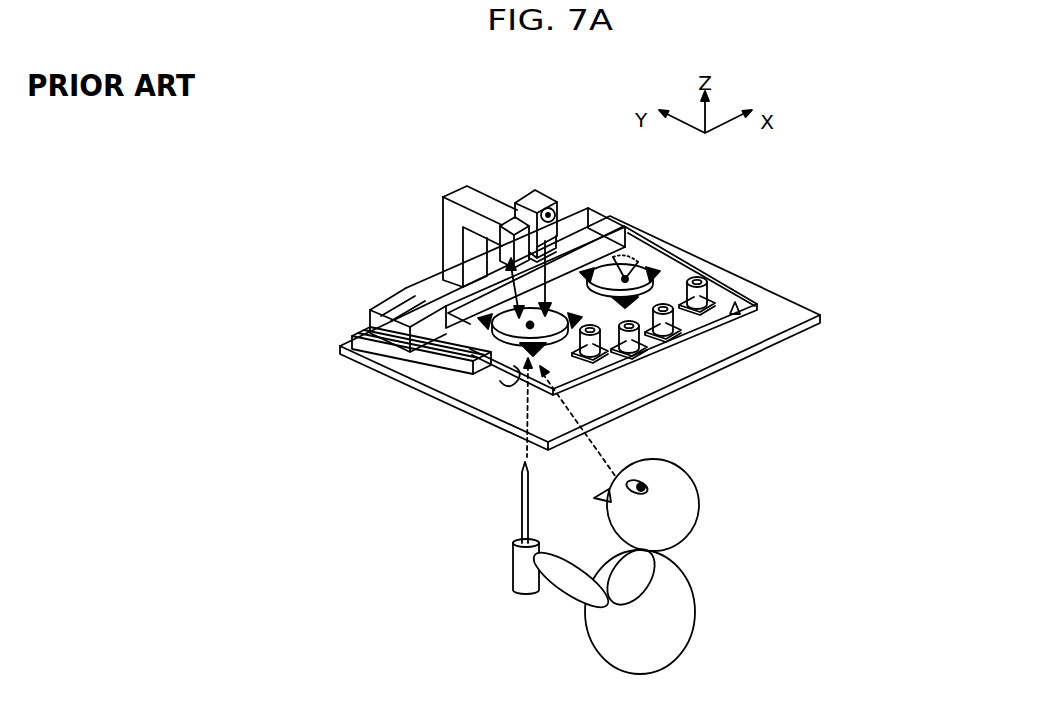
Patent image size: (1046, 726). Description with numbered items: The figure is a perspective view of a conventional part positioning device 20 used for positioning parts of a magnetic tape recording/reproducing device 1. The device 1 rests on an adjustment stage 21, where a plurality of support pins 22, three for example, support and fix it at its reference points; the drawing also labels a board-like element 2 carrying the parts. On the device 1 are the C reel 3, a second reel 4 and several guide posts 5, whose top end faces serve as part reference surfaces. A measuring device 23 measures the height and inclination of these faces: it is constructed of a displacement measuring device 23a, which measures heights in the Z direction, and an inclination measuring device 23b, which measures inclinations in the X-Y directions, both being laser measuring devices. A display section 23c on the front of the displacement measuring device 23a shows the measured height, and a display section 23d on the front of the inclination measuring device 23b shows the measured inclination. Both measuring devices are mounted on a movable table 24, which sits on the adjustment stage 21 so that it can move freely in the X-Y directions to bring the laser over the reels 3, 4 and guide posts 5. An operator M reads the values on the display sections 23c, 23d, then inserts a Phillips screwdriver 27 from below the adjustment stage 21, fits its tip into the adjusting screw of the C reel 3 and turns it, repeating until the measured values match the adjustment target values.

The magnetic tape recording/reproducing device 1 is at (692, 260).
The board 2 is at (745, 300).
The C reel 3 is at (503, 335).
The reel 4 is at (650, 256).
The guide posts 5 is at (700, 282).
The part positioning device 20 is at (408, 229).
The adjustment stage 21 is at (756, 357).
The support pins 22 is at (634, 258).
The measuring device 23 is at (450, 133).
The displacement measuring device 23a is at (496, 240).
The inclination measuring device 23b is at (535, 197).
The display section 23c is at (503, 252).
The display section 23d is at (562, 245).
The movable table 24 is at (368, 298).
The Phillips screwdriver 27 is at (522, 577).
The operator M is at (697, 594).